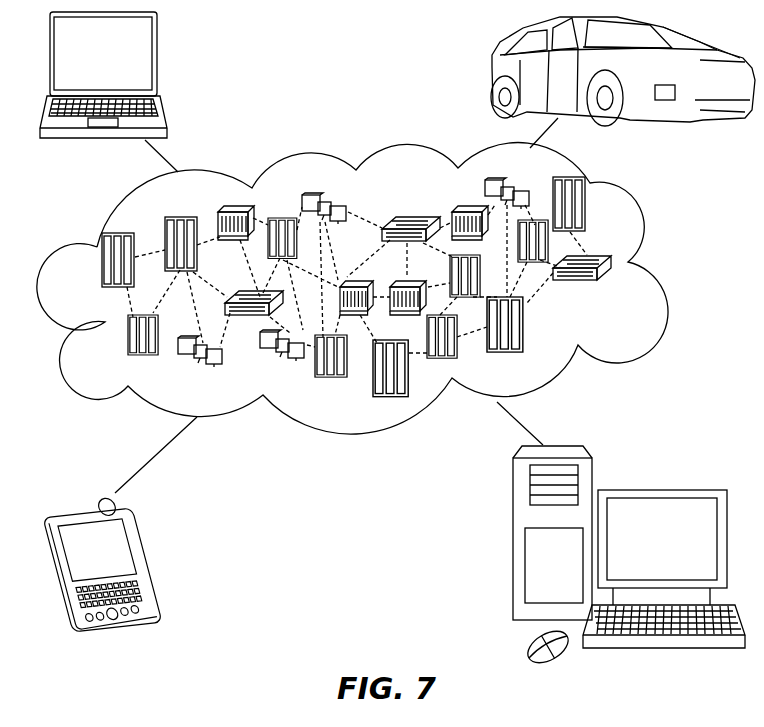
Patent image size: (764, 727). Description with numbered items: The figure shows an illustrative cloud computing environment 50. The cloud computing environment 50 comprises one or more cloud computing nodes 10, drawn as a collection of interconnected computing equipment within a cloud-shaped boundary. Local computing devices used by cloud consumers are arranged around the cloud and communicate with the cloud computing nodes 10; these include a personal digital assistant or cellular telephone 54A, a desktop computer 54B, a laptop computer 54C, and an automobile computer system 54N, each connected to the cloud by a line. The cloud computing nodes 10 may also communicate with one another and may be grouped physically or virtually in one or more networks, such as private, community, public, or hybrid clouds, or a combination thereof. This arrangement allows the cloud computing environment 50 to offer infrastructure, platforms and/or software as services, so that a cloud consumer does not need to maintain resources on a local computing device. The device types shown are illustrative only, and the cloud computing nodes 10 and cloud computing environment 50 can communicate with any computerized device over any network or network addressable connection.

The laptop computer 54C is at (157, 62).
The automobile computer system 54N is at (492, 72).
The personal digital assistant or cellular telephone 54A is at (148, 562).
The desktop computer 54B is at (660, 490).
The cloud computing environment 50 is at (373, 289).
The cloud computing nodes 10 is at (620, 293).